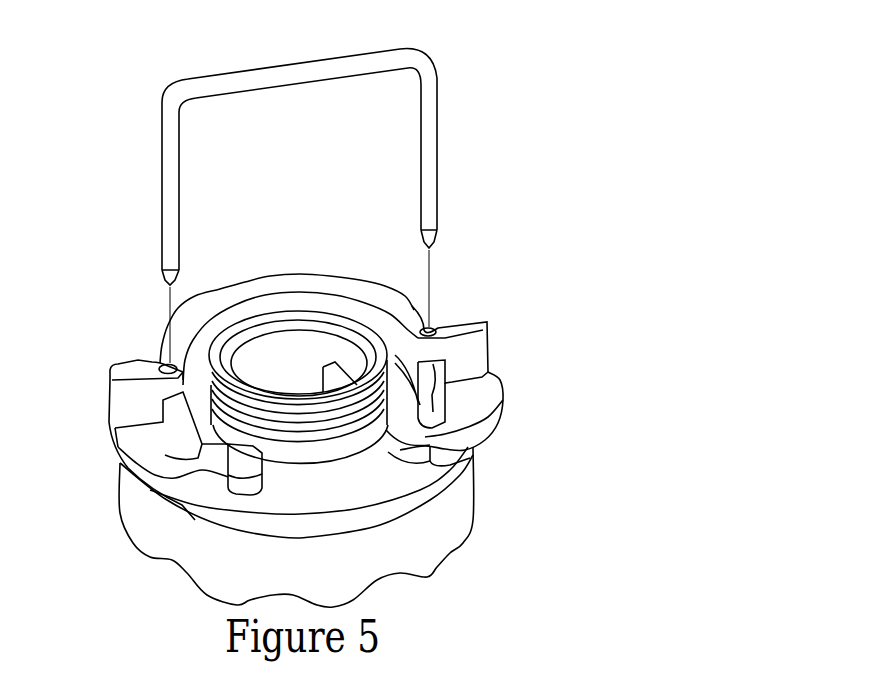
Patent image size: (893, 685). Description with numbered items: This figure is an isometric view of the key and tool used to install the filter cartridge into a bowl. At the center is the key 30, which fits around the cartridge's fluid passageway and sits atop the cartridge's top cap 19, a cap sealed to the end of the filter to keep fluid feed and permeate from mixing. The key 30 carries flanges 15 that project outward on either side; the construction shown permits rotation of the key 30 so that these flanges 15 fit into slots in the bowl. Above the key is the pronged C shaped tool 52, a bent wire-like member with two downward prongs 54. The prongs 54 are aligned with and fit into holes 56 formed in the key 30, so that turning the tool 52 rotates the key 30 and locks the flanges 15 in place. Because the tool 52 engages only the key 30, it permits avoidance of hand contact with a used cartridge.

The flanges 15 is at (478, 402).
The top cap 19 is at (370, 485).
The key 30 is at (296, 302).
The pronged C shaped tool 52 is at (284, 76).
The prongs 54 is at (172, 242).
The holes 56 is at (162, 366).